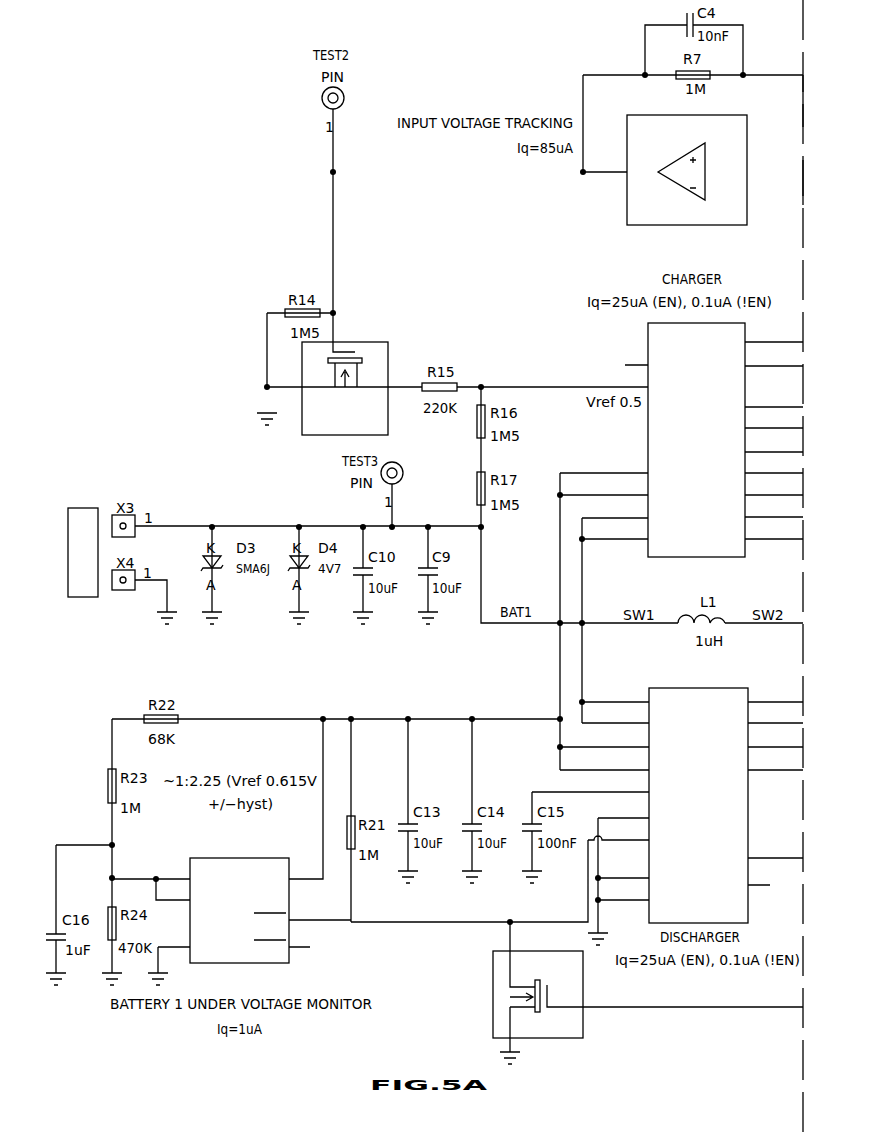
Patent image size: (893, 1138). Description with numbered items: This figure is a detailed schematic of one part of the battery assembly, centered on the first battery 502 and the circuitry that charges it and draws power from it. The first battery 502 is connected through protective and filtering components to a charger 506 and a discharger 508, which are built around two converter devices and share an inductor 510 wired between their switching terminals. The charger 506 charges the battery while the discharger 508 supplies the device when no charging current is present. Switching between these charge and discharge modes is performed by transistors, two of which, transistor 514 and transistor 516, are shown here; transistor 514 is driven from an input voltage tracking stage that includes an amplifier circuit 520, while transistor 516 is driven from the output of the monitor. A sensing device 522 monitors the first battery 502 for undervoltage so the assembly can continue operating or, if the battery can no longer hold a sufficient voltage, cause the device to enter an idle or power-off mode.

The first battery 502 is at (82, 508).
The charger 506 is at (648, 432).
The discharger 508 is at (748, 806).
The inductor 510 is at (690, 628).
The transistor 514 is at (322, 437).
The transistor 516 is at (493, 994).
The input voltage tracking op amp 520 is at (627, 197).
The sensing device 522 is at (289, 965).